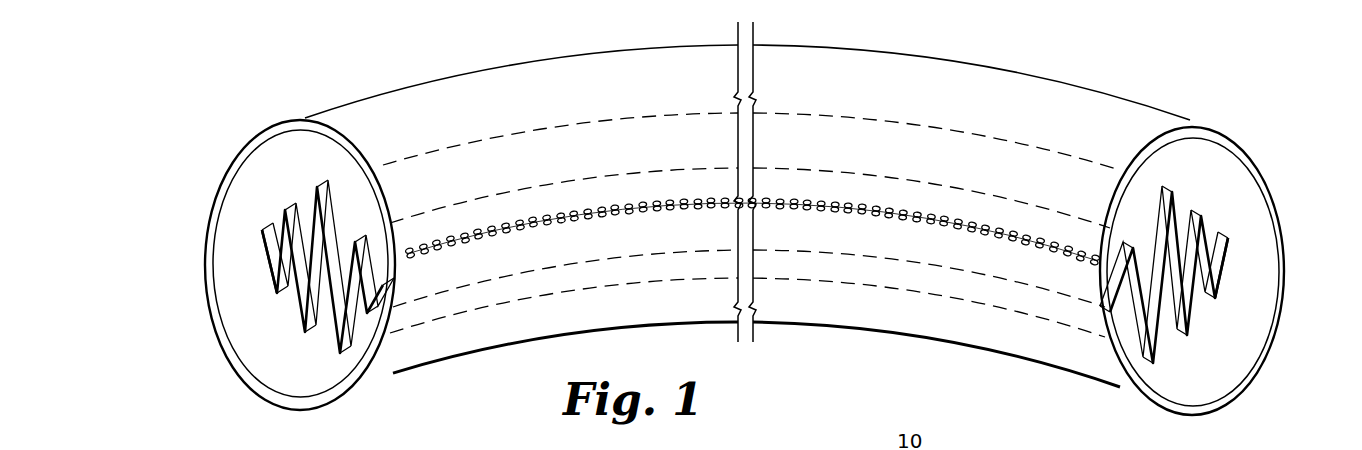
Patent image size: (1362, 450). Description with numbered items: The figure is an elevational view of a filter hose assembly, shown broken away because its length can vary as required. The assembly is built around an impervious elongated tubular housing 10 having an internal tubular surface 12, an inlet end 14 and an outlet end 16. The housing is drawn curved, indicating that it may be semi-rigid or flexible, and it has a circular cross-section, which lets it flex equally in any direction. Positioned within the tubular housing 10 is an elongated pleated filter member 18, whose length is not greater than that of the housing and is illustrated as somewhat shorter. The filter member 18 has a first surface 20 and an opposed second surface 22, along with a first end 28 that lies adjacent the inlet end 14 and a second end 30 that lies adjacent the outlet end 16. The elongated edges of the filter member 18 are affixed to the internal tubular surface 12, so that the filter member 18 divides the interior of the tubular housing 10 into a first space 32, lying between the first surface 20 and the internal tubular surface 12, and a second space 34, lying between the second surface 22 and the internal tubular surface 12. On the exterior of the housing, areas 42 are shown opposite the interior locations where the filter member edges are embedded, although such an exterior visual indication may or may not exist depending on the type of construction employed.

The tubular housing 10 is at (1037, 88).
The internal tubular surface 12 is at (240, 317).
The inlet end 14 is at (210, 289).
The outlet end 16 is at (1272, 215).
The filter member 18 is at (257, 336).
The first surface 20 is at (335, 195).
The second surface 22 is at (292, 280).
The first end 28 is at (262, 232).
The second end 30 is at (1230, 270).
The first space 32 is at (300, 157).
The second space 34 is at (323, 373).
The areas 42 is at (940, 215).